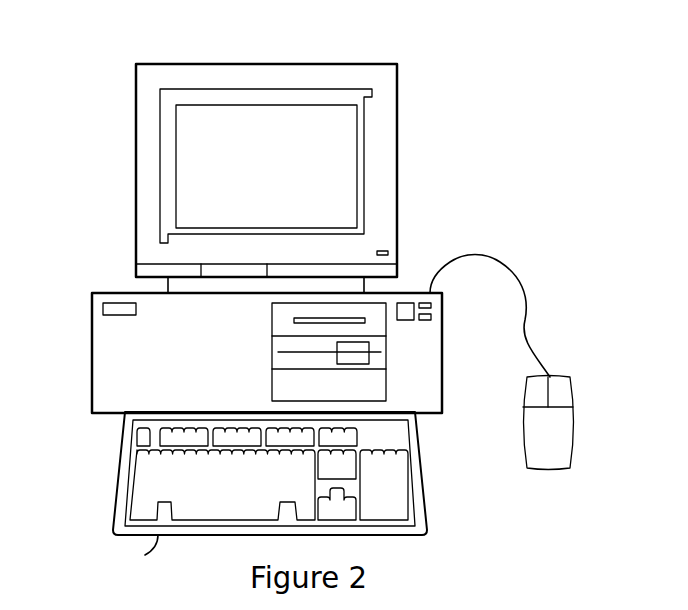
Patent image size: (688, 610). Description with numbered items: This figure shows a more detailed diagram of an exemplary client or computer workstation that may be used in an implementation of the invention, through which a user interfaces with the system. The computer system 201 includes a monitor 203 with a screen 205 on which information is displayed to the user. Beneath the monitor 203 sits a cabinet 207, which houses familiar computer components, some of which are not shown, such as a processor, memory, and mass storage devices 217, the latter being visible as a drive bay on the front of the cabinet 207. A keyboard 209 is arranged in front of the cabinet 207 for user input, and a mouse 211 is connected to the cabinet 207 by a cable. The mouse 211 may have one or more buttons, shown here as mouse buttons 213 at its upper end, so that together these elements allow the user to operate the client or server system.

The computer system 201 is at (410, 51).
The monitor 203 is at (398, 147).
The screen 205 is at (193, 158).
The cabinet 207 is at (117, 295).
The keyboard 209 is at (158, 535).
The mouse 211 is at (547, 457).
The mouse buttons 213 is at (540, 395).
The mass storage devices 217 is at (378, 308).